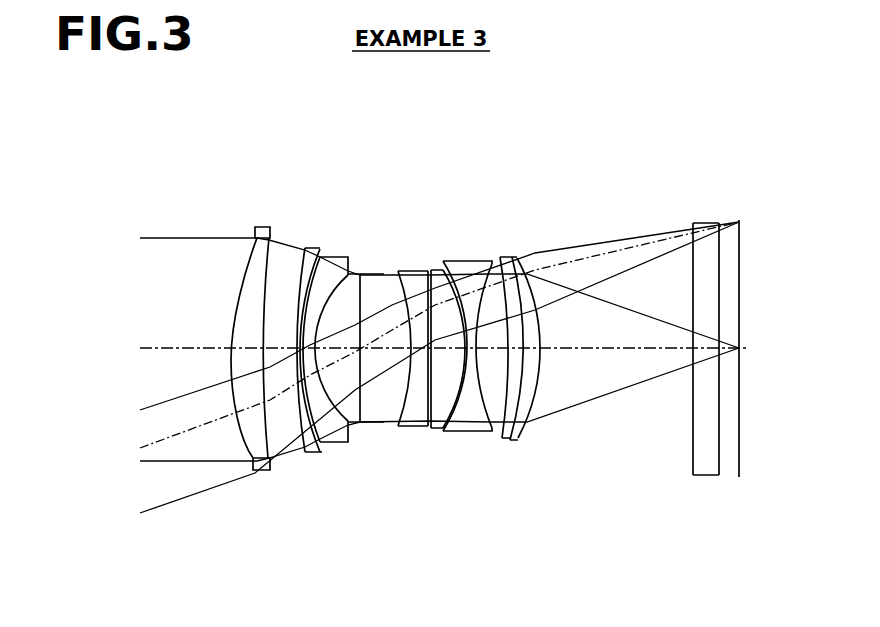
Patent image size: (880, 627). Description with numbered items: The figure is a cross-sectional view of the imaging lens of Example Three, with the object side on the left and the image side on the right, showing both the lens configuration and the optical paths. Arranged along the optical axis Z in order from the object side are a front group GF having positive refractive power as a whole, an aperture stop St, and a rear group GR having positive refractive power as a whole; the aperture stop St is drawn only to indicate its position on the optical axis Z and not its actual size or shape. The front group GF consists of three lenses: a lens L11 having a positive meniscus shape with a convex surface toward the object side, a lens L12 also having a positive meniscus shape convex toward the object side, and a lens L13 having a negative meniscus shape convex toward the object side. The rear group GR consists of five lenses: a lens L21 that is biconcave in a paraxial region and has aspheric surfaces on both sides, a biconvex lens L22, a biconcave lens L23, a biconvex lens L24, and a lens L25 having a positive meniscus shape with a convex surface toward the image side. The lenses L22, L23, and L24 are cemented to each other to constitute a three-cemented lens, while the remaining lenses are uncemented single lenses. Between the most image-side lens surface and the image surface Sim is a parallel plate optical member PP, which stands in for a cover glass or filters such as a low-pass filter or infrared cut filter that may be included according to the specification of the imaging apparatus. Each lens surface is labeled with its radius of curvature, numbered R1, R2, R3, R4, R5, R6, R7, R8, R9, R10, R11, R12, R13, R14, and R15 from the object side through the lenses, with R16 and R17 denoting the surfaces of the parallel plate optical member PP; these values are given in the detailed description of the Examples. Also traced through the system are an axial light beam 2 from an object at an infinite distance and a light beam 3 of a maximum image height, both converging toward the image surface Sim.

The lens L11 is at (247, 356).
The lens L12 is at (298, 368).
The lens L13 is at (337, 341).
The lens L21 is at (396, 341).
The lens L22 is at (428, 353).
The lens L23 is at (466, 341).
The lens L24 is at (514, 368).
The lens L25 is at (541, 356).
The front group GF is at (230, 110).
The rear group GR is at (397, 110).
The aperture stop St is at (370, 270).
The optical axis Z is at (160, 342).
The parallel plate optical member PP is at (690, 376).
The image surface Sim is at (745, 226).
The axial light beam 2 is at (594, 400).
The light beam of a maximum image height 3 is at (606, 237).
The radius of curvature R1 is at (248, 460).
The radius of curvature R2 is at (273, 459).
The radius of curvature R3 is at (300, 453).
The radius of curvature R4 is at (310, 455).
The radius of curvature R5 is at (333, 447).
The radius of curvature R6 is at (350, 432).
The radius of curvature R7 is at (404, 348).
The radius of curvature R8 is at (396, 427).
The radius of curvature R9 is at (411, 429).
The radius of curvature R10 is at (434, 426).
The radius of curvature R11 is at (462, 420).
The radius of curvature R12 is at (471, 433).
The radius of curvature R13 is at (505, 440).
The radius of curvature R14 is at (518, 434).
The radius of curvature R15 is at (533, 438).
The radius of curvature R16 is at (692, 471).
The radius of curvature R17 is at (722, 474).